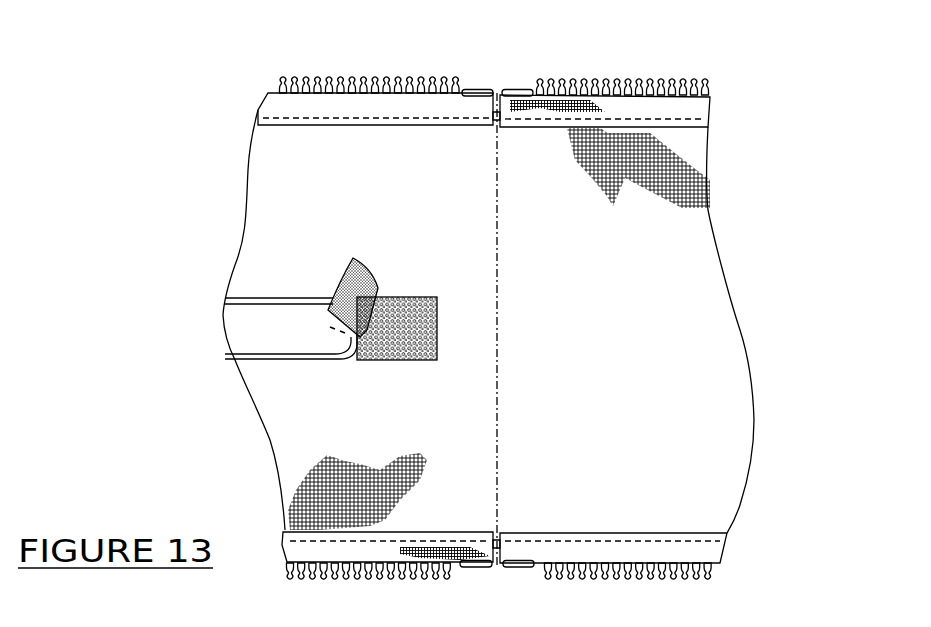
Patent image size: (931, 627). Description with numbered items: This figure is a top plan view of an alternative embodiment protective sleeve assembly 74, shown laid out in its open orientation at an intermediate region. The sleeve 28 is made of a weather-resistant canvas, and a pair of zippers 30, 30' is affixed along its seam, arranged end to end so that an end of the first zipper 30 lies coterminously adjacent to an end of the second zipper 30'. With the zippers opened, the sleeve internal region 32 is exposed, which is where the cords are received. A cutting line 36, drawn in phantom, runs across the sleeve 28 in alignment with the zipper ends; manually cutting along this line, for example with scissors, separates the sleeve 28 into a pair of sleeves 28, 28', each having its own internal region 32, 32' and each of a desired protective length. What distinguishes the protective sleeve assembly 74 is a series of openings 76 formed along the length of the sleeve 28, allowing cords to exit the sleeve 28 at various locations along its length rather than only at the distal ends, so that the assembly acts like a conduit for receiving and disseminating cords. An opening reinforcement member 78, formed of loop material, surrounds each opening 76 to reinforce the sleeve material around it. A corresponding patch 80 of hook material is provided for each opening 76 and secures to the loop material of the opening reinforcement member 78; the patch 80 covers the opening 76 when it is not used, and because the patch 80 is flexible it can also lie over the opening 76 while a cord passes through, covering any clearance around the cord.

The protective sleeve assembly 74 is at (478, 43).
The sleeve 28 is at (666, 328).
The sleeve 28' is at (244, 319).
The zipper 30 is at (605, 80).
The zipper 30' is at (375, 77).
The sleeve internal region 32 is at (665, 514).
The sleeve internal region 32' is at (345, 516).
The cutting line 36 is at (498, 181).
The opening 76 is at (378, 332).
The opening reinforcement member 78 is at (413, 358).
The patch 80 is at (330, 292).